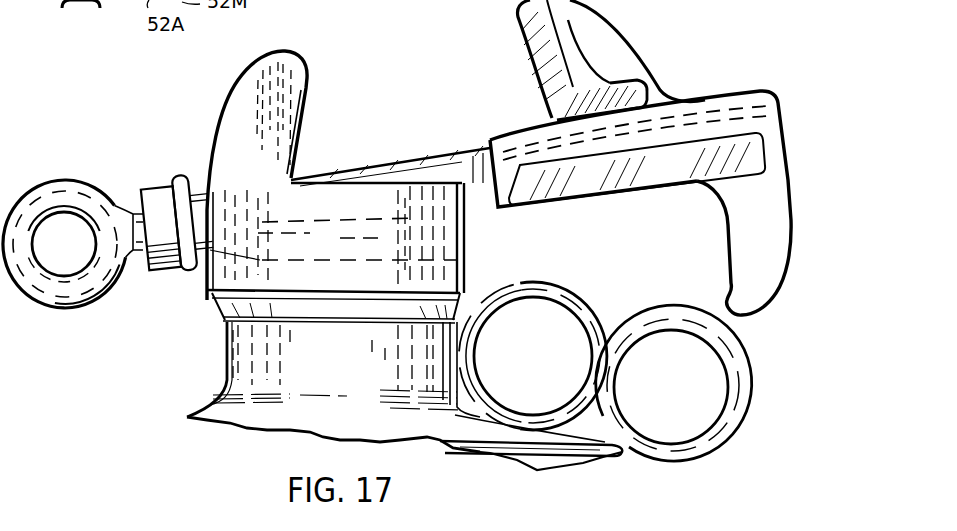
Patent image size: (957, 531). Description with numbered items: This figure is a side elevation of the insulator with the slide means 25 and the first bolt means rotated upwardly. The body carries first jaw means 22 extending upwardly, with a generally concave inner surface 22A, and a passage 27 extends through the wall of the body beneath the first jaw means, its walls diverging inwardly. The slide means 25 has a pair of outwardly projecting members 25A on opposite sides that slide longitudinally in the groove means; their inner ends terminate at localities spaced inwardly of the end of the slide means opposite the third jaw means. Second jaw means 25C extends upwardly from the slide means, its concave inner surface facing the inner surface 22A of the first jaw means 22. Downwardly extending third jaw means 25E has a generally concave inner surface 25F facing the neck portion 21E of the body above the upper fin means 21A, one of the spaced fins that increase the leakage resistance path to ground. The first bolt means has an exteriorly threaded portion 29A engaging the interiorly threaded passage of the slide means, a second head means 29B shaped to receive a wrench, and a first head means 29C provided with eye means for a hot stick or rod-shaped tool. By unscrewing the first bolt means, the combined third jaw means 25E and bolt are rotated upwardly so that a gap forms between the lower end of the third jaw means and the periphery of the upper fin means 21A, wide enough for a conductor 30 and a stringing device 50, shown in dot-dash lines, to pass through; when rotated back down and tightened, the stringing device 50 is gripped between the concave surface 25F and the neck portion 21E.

The first jaw means 22 is at (233, 90).
The generally concave inner surface 22A is at (308, 90).
The passage 27 is at (233, 163).
The exteriorly threaded portion 29A is at (407, 163).
The second head means 29B is at (157, 186).
The first head means 29C is at (52, 182).
The slide means 25 is at (685, 62).
The outwardly projecting members 25A is at (765, 133).
The second jaw means 25C is at (624, 33).
The third jaw means 25E is at (789, 226).
The generally concave inner surface 25F is at (723, 238).
The conductor 30 is at (551, 299).
The stringing device 50 is at (633, 313).
The neck portion 21E is at (223, 352).
The upper fin means 21A is at (603, 453).